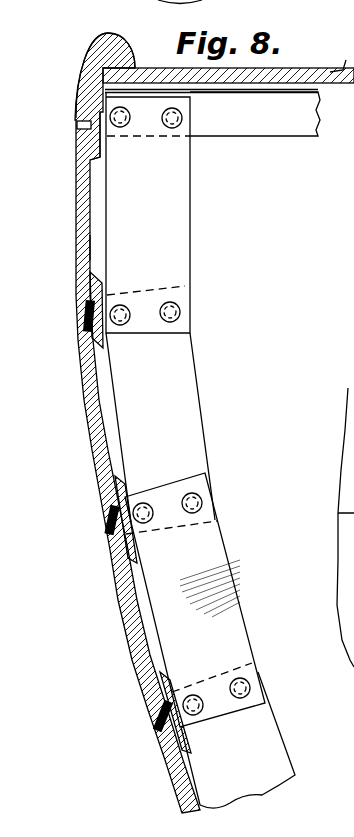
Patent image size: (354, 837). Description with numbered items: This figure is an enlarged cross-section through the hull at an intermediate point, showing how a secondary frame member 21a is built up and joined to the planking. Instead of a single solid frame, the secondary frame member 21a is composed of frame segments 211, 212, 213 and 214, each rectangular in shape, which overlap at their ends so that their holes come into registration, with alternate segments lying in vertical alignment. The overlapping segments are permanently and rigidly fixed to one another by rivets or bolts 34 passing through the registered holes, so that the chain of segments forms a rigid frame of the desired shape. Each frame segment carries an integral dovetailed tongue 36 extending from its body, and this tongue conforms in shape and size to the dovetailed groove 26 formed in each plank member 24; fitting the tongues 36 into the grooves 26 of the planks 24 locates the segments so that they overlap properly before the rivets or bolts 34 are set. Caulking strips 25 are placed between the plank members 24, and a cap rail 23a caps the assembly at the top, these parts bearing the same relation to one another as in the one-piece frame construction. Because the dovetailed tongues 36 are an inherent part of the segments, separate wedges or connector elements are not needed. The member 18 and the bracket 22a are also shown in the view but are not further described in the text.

The frame member 18 is at (342, 57).
The frame segment 211 is at (192, 222).
The frame segment 212 is at (192, 388).
The frame segment 213 is at (223, 563).
The frame segment 214 is at (280, 757).
The secondary frame member 21a is at (222, 470).
The mounting bracket 22a is at (276, 126).
The cap rail 23a is at (82, 60).
The plank member 24 is at (78, 213).
The caulking strip 25 is at (86, 313).
The dovetailed groove 26 is at (90, 171).
The rivets or bolts 34 is at (178, 307).
The dovetailed tongue 36 is at (92, 245).